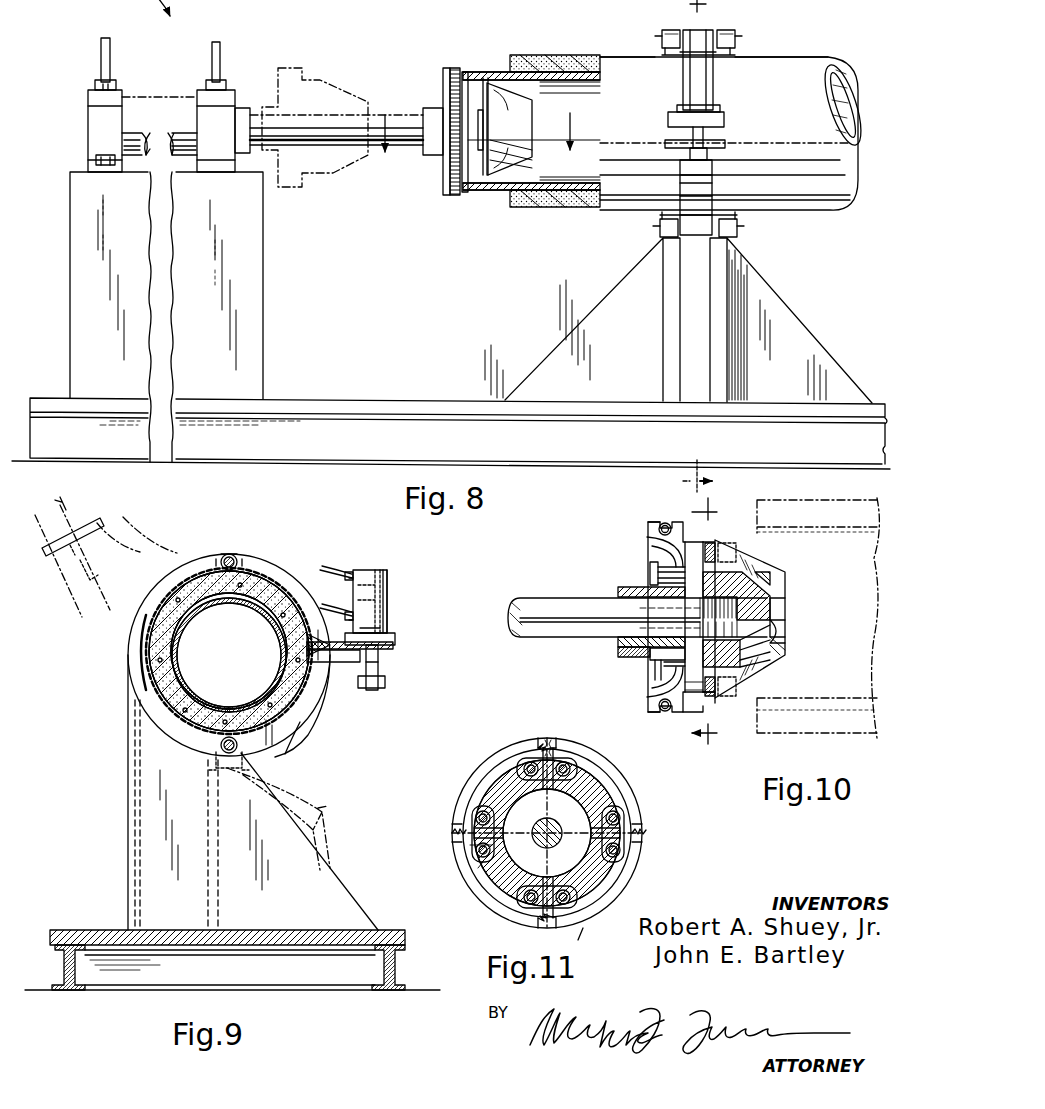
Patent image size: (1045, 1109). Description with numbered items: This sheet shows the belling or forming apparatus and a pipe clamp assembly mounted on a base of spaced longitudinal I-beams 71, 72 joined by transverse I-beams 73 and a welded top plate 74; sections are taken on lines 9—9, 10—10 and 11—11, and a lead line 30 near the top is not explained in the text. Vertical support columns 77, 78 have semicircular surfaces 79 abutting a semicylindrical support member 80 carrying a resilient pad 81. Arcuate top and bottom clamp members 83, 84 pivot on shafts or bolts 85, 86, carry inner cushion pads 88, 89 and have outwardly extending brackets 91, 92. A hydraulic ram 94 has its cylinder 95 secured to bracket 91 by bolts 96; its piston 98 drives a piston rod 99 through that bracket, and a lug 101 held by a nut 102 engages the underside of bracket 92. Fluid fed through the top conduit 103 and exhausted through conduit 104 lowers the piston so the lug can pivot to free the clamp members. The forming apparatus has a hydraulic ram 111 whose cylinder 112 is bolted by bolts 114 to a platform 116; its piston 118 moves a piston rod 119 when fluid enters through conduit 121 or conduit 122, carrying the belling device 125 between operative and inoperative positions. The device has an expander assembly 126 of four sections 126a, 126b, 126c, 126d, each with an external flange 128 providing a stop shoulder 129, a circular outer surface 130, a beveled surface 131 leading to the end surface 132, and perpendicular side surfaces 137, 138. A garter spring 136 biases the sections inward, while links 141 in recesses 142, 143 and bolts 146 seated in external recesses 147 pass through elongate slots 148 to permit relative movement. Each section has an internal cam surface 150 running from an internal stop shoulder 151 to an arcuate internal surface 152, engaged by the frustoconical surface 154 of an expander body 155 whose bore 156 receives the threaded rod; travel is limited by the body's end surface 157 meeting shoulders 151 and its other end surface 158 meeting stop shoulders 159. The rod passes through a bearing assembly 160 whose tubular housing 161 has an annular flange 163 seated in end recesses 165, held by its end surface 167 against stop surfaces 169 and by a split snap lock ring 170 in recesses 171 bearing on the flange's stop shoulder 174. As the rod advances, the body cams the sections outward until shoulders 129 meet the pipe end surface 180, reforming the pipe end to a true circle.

In FIG. 8, the section line 9— 9 is at (686, 249).
In FIG. 8, the section line 10— 10 is at (474, 122).
In FIG. 10, the section line 11— 11 is at (718, 622).
In FIG. 8, the apparatus 30 is at (157, 8).
In FIG. 9, the longitudinal I-beam 71 is at (393, 982).
In FIG. 9, the longitudinal I-beam 72 is at (62, 965).
In FIG. 9, the transverse I-beams 73 is at (137, 985).
In FIG. 9, the top plate 74 is at (392, 934).
In FIG. 8, the support column 77 is at (665, 264).
In FIG. 8, the support column 78 is at (722, 272).
In FIG. 9, the semicircular surfaces 79 is at (147, 660).
In FIG. 9, the support member 80 is at (148, 680).
In FIG. 9, the resilient pad 81 is at (135, 632).
In FIG. 9, the top clamp member 83 is at (273, 568).
In FIG. 8, the bottom clamp member 84 is at (710, 180).
In FIG. 9, the bottom clamp member 84 is at (302, 718).
In FIG. 8, the shaft or bolt 85 is at (742, 44).
In FIG. 9, the shaft or bolt 85 is at (226, 556).
In FIG. 8, the shaft or bolt 86 is at (742, 228).
In FIG. 9, the shaft or bolt 86 is at (221, 746).
In FIG. 9, the cushion pad 88 is at (242, 582).
In FIG. 9, the cushion pad 89 is at (282, 728).
In FIG. 8, the bracket 91 is at (727, 122).
In FIG. 9, the bracket 91 is at (394, 645).
In FIG. 8, the bracket 92 is at (668, 144).
In FIG. 9, the bracket 92 is at (336, 680).
In FIG. 8, the hydraulic ram 94 is at (716, 86).
In FIG. 9, the hydraulic ram 94 is at (363, 568).
In FIG. 9, the cylinder 95 is at (388, 570).
In FIG. 9, the bolts 96 is at (390, 634).
In FIG. 9, the piston 98 is at (384, 603).
In FIG. 9, the piston rod 99 is at (382, 657).
In FIG. 9, the lug 101 is at (360, 688).
In FIG. 9, the nut 102 is at (380, 680).
In FIG. 9, the top conduit 103 is at (320, 572).
In FIG. 9, the conduit 104 is at (342, 594).
In FIG. 8, the hydraulic ram 111 is at (138, 92).
In FIG. 8, the cylinder 112 is at (125, 108).
In FIG. 8, the bolts 114 is at (100, 158).
In FIG. 8, the platform 116 is at (252, 182).
In FIG. 8, the piston 118 is at (190, 112).
In FIG. 8, the piston rod 119 is at (272, 115).
In FIG. 8, the conduit 121 is at (101, 50).
In FIG. 8, the conduit 122 is at (222, 57).
In FIG. 8, the belling device 125 is at (318, 78).
In FIG. 10, the expander assembly 126 is at (648, 534).
In FIG. 11, the expander section 126a is at (607, 755).
In FIG. 11, the expander section 126b is at (636, 873).
In FIG. 11, the expander section 126c is at (470, 897).
In FIG. 11, the expander section 126d is at (475, 772).
In FIG. 10, the external flange 128 is at (650, 710).
In FIG. 10, the stop shoulder 129 is at (690, 712).
In FIG. 8, the outer surface 130 is at (468, 74).
In FIG. 10, the outer surface 130 is at (705, 714).
In FIG. 8, the beveled surface 131 is at (520, 122).
In FIG. 10, the beveled surface 131 is at (768, 564).
In FIG. 10, the end surface 132 is at (785, 590).
In FIG. 10, the garter spring 136 is at (662, 525).
In FIG. 11, the garter spring 136 is at (546, 750).
In FIG. 10, the side surface 137 is at (780, 578).
In FIG. 11, the side surface 137 is at (553, 750).
In FIG. 10, the side surface 138 is at (780, 666).
In FIG. 11, the side surface 138 is at (518, 762).
In FIG. 11, the links 141 is at (474, 815).
In FIG. 11, the recess 142 is at (588, 769).
In FIG. 11, the recess 143 is at (518, 764).
In FIG. 8, the bolts 146 is at (505, 82).
In FIG. 8, the external recesses 147 is at (500, 137).
In FIG. 11, the elongate slots 148 is at (472, 845).
In FIG. 10, the internal cam surface 150 is at (782, 653).
In FIG. 10, the internal stop shoulder 151 is at (775, 608).
In FIG. 10, the arcuate internal surface 152 is at (655, 693).
In FIG. 10, the frustoconical surface 154 is at (780, 640).
In FIG. 10, the expander body 155 is at (744, 578).
In FIG. 10, the bore 156 is at (670, 620).
In FIG. 10, the outer circular end surface 157 is at (773, 625).
In FIG. 10, the end surface 158 is at (682, 690).
In FIG. 10, the internal stop shoulders 159 is at (650, 540).
In FIG. 10, the bearing assembly 160 is at (620, 580).
In FIG. 10, the tubular housing 161 is at (620, 590).
In FIG. 10, the external annular flange 163 is at (658, 666).
In FIG. 10, the end recesses 165 is at (652, 656).
In FIG. 10, the annular end surface 167 is at (662, 567).
In FIG. 10, the stop surfaces 169 is at (661, 676).
In FIG. 10, the split snap lock ring 170 is at (658, 585).
In FIG. 10, the recesses 171 is at (654, 572).
In FIG. 10, the annular stop shoulder 174 is at (626, 640).
In FIG. 8, the end surface 180 is at (455, 68).